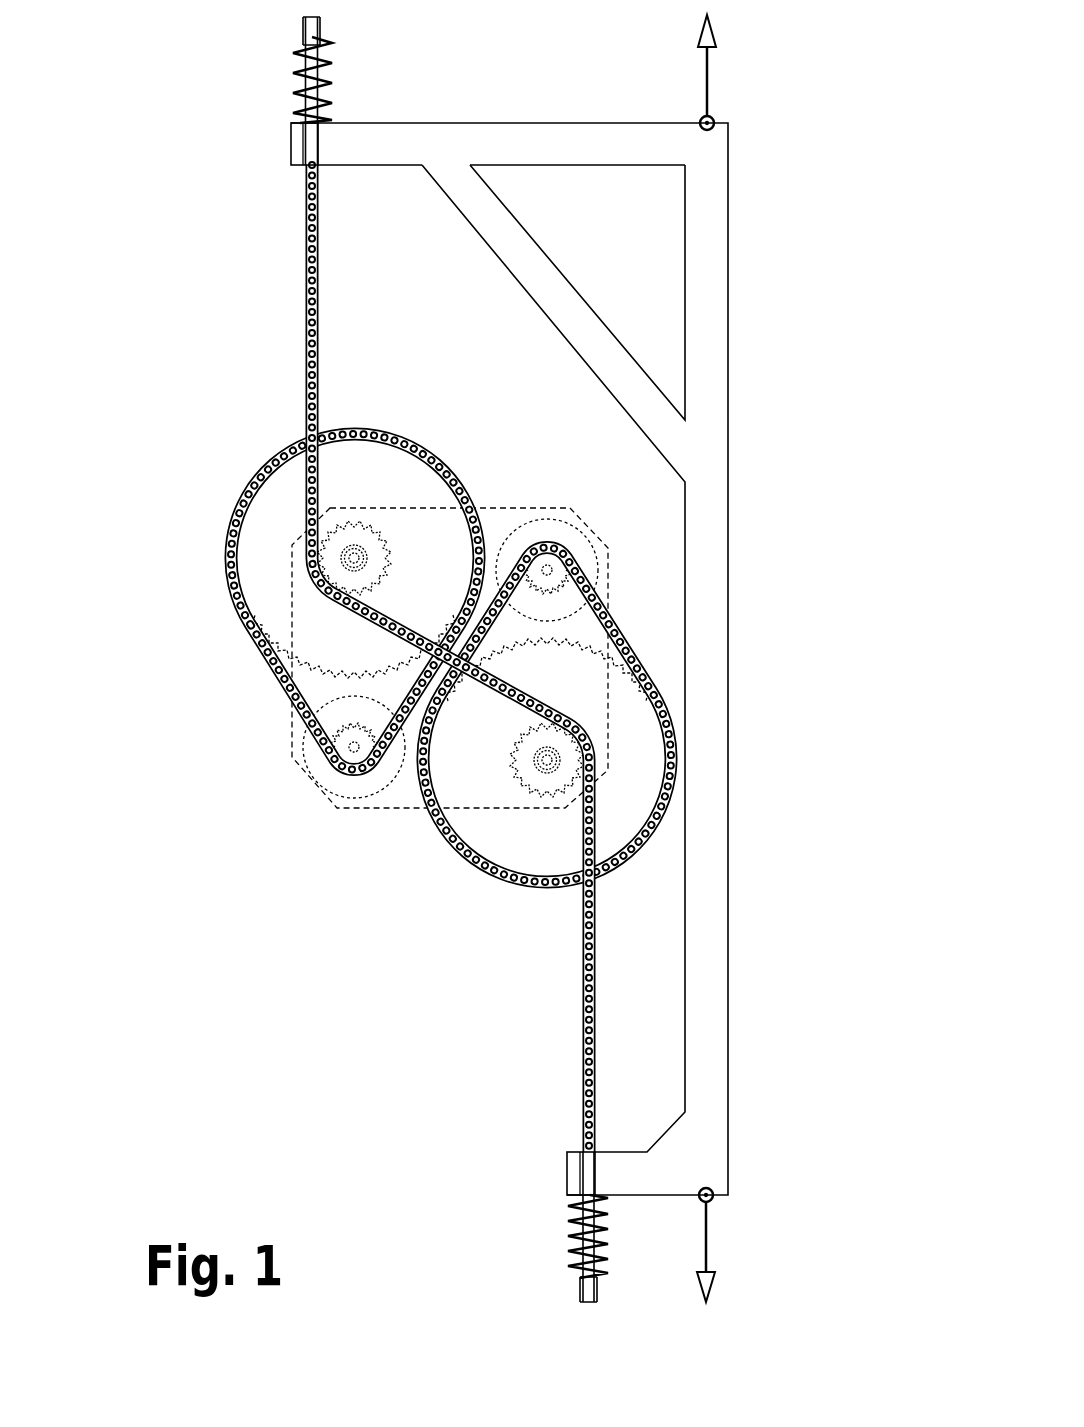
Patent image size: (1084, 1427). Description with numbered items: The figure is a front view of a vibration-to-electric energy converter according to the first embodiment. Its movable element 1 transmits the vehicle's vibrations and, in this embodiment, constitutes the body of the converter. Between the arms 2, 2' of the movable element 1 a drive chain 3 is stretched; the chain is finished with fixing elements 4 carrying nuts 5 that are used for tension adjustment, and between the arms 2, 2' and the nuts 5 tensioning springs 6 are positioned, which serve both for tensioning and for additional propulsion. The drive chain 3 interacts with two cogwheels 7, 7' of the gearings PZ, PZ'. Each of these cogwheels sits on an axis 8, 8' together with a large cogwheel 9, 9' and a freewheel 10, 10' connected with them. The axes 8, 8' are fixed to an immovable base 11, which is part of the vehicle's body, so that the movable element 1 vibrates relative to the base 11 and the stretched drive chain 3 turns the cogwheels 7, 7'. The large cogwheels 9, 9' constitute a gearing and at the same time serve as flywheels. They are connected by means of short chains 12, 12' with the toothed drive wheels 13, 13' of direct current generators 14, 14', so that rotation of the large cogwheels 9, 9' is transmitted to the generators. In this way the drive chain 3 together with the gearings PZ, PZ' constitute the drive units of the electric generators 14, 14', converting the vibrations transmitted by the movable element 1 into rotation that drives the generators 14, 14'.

The movable element 1 is at (720, 290).
The arm 2 is at (501, 105).
The arm 2' is at (526, 1137).
The drive chain 3 is at (308, 262).
The fixing element 4 is at (307, 168).
The nut 5 is at (303, 30).
The tensioning spring 6 is at (294, 90).
The cogwheel 7 is at (259, 626).
The cogwheel 7' is at (698, 672).
The axis 8 is at (289, 569).
The axis 8' is at (664, 747).
The large cogwheel 9 is at (321, 659).
The large cogwheel 9' is at (632, 635).
The freewheel 10 is at (267, 549).
The freewheel 10' is at (685, 766).
The immovable base 11 is at (490, 522).
The short chain 12 is at (323, 602).
The short chain 12' is at (630, 699).
The toothed drive wheel 13 is at (286, 755).
The toothed drive wheel 13' is at (666, 530).
The direct current generator 14 is at (273, 791).
The direct current generator 14' is at (680, 483).
The gearing PZ is at (195, 462).
The gearing PZ' is at (763, 831).